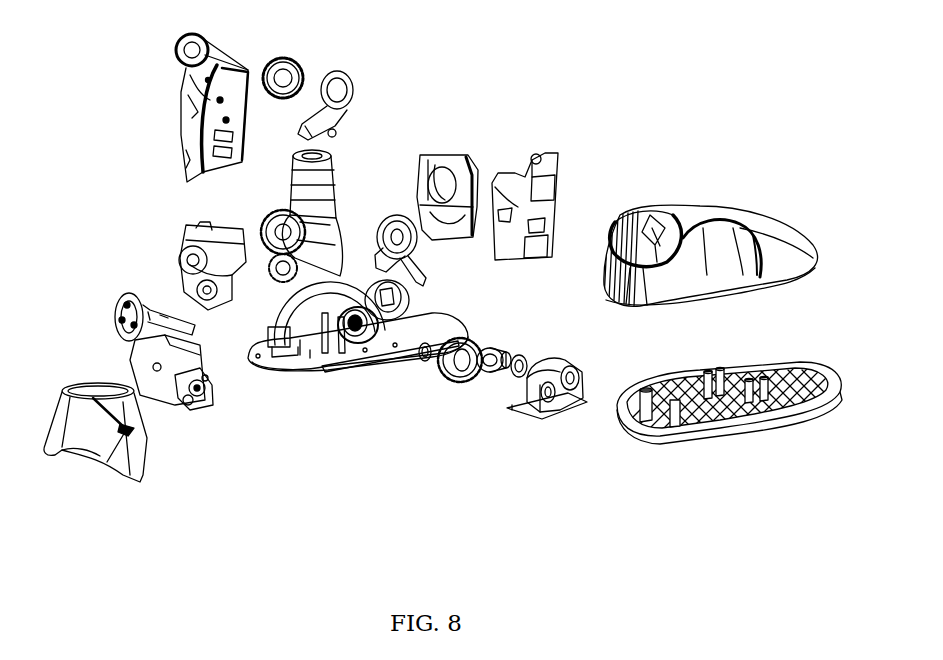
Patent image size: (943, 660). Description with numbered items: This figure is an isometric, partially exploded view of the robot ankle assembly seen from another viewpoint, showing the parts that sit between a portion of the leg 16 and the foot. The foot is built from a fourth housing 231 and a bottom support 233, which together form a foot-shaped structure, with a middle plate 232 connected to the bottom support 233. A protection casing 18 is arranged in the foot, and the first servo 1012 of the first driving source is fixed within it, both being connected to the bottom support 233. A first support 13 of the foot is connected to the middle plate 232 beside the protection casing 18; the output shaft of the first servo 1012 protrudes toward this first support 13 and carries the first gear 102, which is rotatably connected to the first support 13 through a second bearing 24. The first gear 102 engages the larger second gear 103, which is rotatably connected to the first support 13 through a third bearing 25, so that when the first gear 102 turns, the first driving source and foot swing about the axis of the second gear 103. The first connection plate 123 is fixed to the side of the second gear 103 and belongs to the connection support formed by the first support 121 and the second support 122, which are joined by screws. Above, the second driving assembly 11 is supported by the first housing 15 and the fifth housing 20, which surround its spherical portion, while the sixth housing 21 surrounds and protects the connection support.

The leg 16 is at (238, 64).
The fifth housing 20 is at (443, 153).
The second driving assembly 11 is at (340, 187).
The protection casing 18 is at (365, 285).
The second support 122 is at (432, 283).
The first gear 102 is at (500, 357).
The second bearing 24 is at (527, 360).
The first support 121 is at (117, 353).
The first servo 1012 is at (367, 367).
The middle plate 232 is at (317, 375).
The third bearing 25 is at (420, 362).
The second gear 103 is at (453, 390).
The first support 13 is at (547, 423).
The first connection plate 123 is at (193, 407).
The sixth housing 21 is at (143, 477).
The fourth housing 231 is at (693, 287).
The bottom support 233 is at (710, 428).
The first housing 15 is at (193, 223).